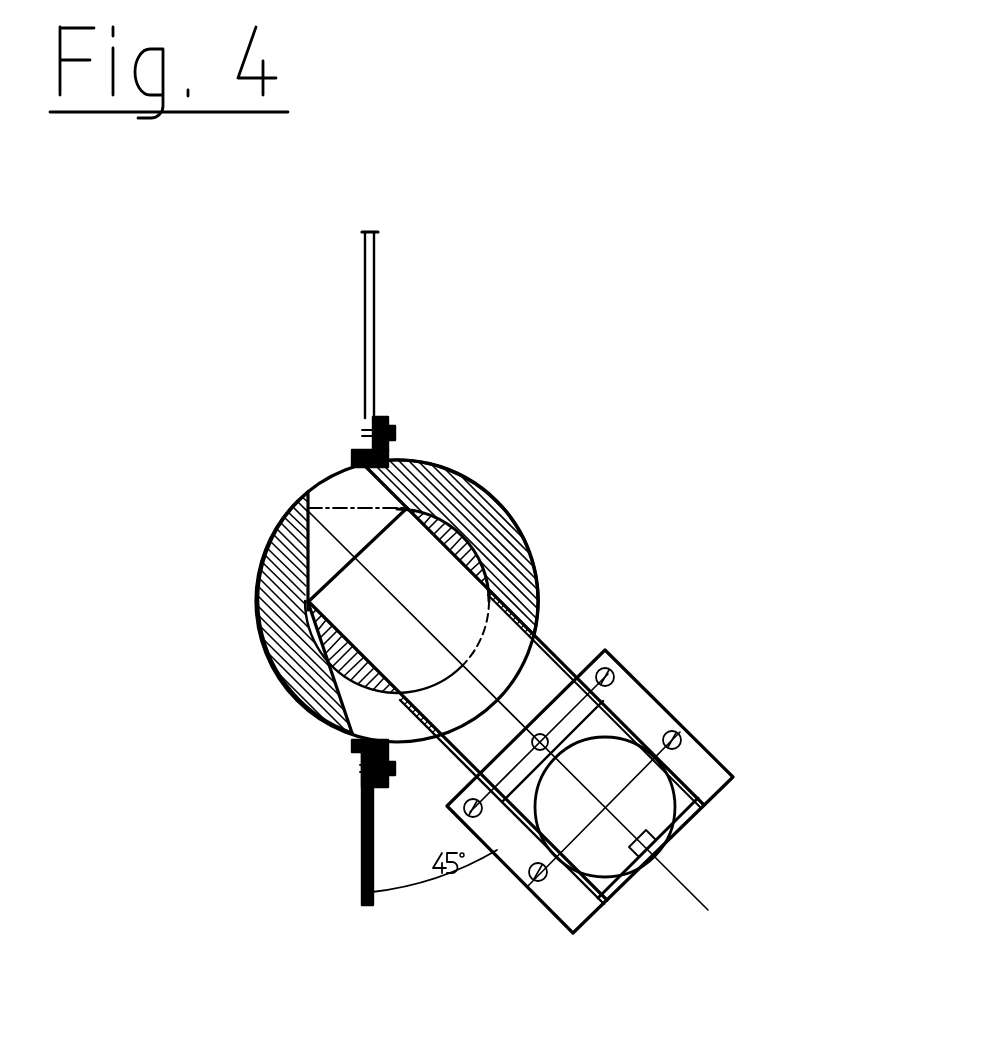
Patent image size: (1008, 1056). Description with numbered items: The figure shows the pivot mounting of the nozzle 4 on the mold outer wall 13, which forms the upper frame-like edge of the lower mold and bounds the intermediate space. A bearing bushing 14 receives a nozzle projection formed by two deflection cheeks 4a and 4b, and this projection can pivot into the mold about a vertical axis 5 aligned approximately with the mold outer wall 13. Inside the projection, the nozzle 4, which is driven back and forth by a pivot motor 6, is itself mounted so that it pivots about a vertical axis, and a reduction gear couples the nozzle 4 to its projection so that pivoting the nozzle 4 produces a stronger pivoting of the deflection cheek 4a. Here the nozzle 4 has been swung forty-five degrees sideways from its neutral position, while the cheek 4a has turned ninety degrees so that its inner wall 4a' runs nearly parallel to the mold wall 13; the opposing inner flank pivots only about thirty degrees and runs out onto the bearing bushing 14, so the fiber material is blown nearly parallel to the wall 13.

The nozzle 4 is at (498, 655).
The deflection cheek 4a is at (190, 612).
The inner wall 4a' is at (217, 470).
The deflection cheek 4b is at (518, 535).
The vertical axis 5 is at (392, 610).
The pivot motor 6 is at (613, 823).
The mold outer wall 13 is at (368, 307).
The bearing bushing 14 is at (395, 432).